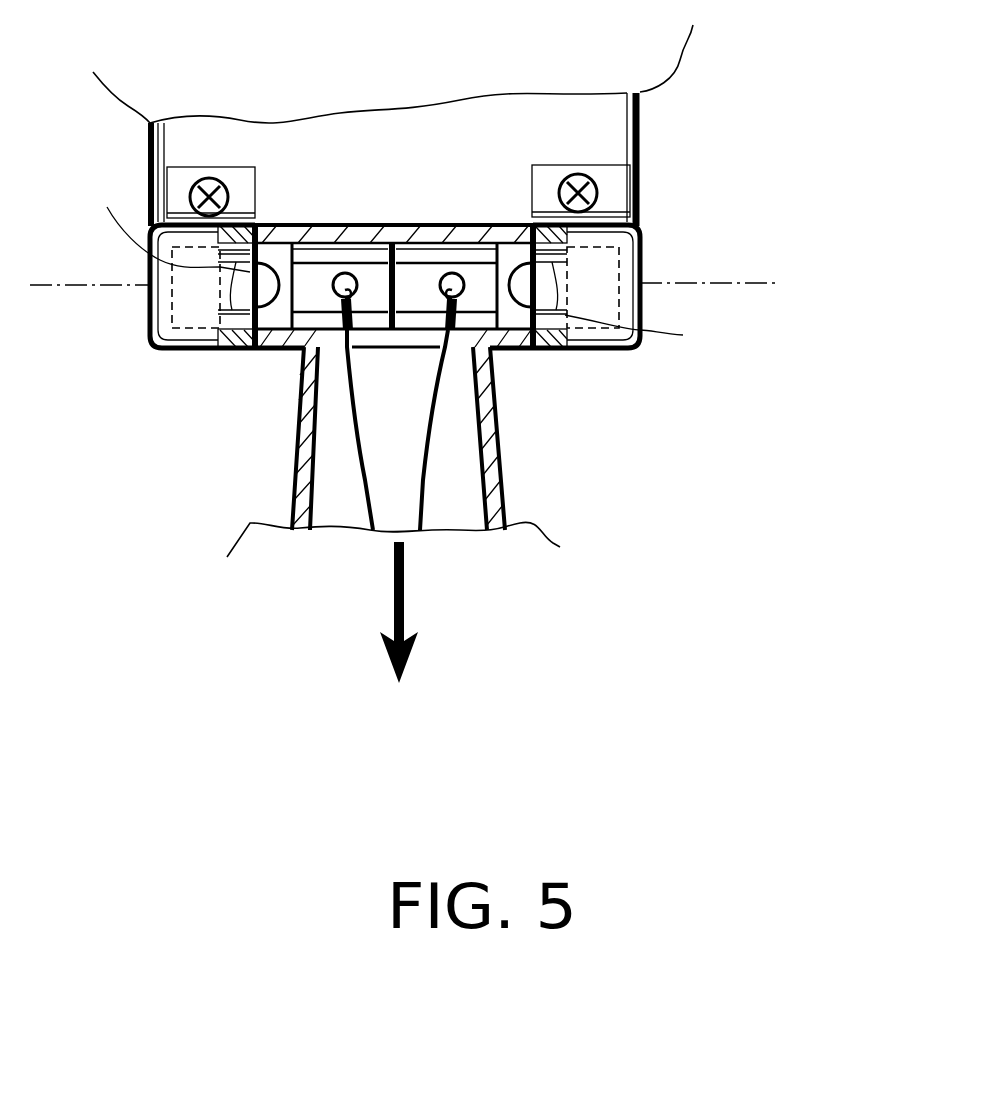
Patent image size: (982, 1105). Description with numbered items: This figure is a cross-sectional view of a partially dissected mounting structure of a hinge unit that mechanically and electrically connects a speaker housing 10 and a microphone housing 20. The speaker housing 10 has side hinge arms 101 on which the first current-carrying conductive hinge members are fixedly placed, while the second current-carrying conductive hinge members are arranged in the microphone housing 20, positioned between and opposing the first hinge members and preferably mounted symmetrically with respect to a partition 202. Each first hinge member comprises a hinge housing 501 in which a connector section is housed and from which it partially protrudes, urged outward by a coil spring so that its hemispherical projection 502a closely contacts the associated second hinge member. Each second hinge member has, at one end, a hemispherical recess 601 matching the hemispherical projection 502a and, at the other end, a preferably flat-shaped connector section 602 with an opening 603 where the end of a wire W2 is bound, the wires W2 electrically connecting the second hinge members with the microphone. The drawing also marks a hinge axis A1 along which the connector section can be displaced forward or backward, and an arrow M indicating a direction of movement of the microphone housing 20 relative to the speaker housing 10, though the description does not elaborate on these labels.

The speaker housing 10 is at (656, 164).
The microphone housing 20 is at (518, 438).
The side hinge arms 101 is at (190, 300).
The hemispherical projection 502a is at (415, 276).
The hinge housing 501 is at (550, 213).
The hemispherical recess 601 is at (275, 325).
The connector section 602 is at (325, 278).
The opening 603 is at (345, 272).
The partition 202 is at (394, 250).
The wires W2 is at (360, 465).
The movement direction M is at (399, 630).
The axis A1 is at (685, 280).